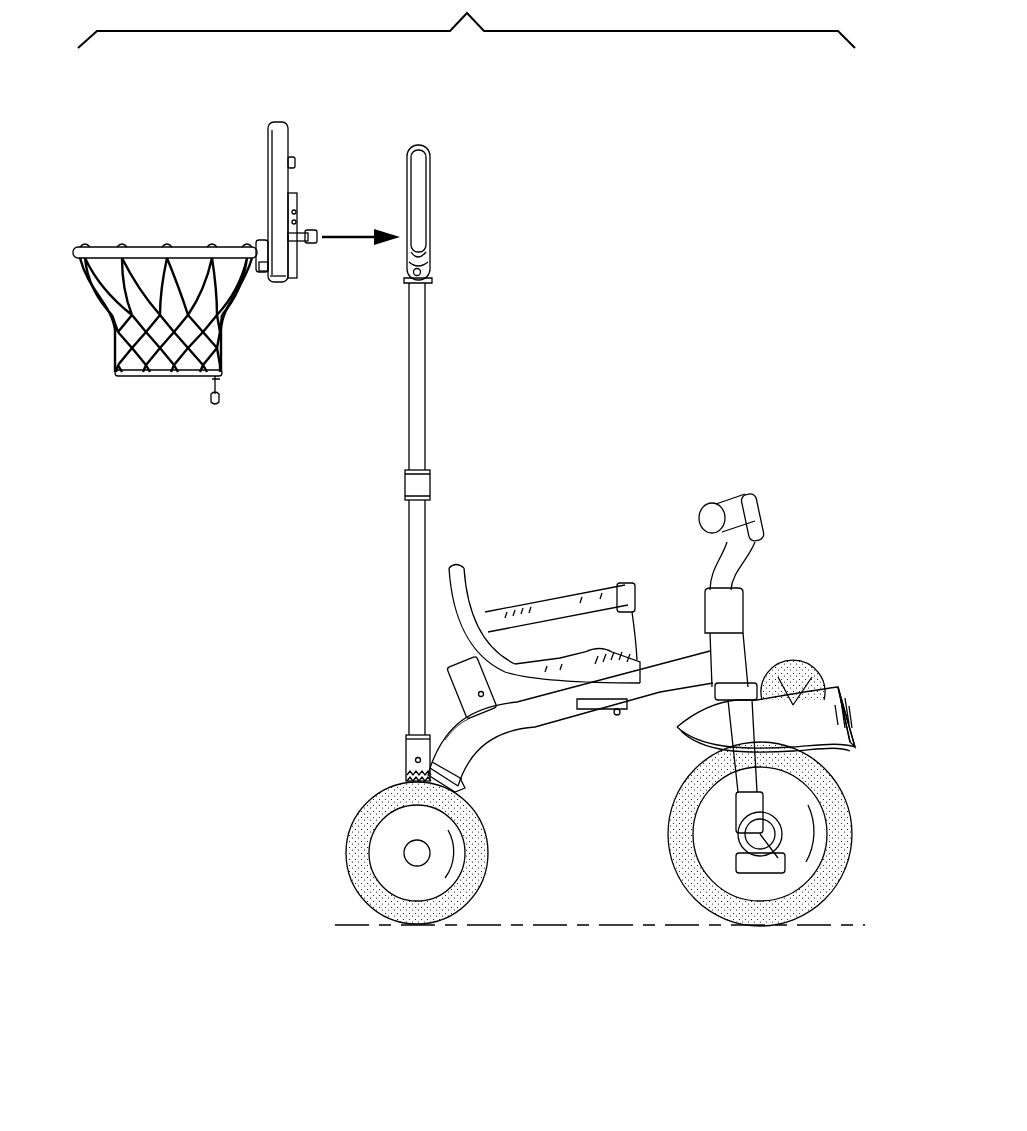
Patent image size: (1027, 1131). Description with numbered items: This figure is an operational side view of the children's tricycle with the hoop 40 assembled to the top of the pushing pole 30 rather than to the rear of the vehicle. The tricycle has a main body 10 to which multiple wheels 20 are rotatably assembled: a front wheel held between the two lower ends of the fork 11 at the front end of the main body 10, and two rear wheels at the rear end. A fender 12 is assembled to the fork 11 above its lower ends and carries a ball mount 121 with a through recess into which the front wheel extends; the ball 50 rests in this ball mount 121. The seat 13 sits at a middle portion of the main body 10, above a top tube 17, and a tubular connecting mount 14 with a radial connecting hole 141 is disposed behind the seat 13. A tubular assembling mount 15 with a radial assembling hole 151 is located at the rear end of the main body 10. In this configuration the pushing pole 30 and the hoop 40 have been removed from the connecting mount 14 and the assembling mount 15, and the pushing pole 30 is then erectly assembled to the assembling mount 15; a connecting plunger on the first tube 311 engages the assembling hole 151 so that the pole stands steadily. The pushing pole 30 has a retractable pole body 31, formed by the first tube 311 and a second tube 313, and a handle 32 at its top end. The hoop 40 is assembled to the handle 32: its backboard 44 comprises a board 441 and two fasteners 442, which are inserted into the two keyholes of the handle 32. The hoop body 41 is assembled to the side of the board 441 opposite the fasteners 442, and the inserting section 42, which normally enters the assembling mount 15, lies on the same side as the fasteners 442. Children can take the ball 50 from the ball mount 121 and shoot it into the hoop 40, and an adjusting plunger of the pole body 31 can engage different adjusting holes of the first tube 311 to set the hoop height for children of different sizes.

The main body 10 is at (768, 556).
The fork 11 is at (748, 784).
The fender 12 is at (679, 751).
The ball mount 121 is at (847, 706).
The seat 13 is at (479, 598).
The connecting mount 14 is at (461, 652).
The connecting hole 141 is at (482, 698).
The assembling mount 15 is at (404, 742).
The assembling hole 151 is at (416, 761).
The top tube 17 is at (685, 673).
The wheels 20 is at (370, 880).
The pushing pole 30 is at (500, 291).
The pole body 31 is at (431, 478).
The first tube 311 is at (430, 530).
The second tube 313 is at (419, 376).
The handle 32 is at (433, 201).
The hoop 40 is at (163, 180).
The hoop body 41 is at (147, 245).
The inserting section 42 is at (295, 270).
The backboard 44 is at (260, 167).
The board 441 is at (281, 279).
The fasteners 442 is at (312, 233).
The ball 50 is at (793, 686).